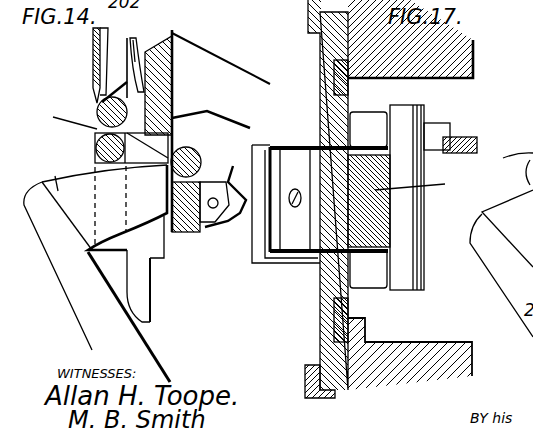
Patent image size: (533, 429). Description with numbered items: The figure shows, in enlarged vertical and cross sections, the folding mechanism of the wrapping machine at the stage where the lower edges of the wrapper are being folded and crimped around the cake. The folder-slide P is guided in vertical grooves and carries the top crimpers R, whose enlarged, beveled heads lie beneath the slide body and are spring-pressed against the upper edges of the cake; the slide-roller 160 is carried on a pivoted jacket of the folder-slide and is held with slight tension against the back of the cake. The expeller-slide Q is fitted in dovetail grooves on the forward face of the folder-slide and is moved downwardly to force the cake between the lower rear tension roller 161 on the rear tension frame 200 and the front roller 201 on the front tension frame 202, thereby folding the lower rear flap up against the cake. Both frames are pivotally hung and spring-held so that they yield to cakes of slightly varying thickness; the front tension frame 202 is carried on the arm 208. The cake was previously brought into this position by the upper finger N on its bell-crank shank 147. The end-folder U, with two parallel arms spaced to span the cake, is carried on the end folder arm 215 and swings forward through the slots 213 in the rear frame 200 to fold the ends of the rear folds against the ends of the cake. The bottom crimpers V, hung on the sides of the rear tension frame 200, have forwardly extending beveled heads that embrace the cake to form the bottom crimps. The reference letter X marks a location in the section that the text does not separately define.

In FIG. 14, the front tension frame 202 is at (185, 205).
In FIG. 14, the front roller 201 is at (203, 147).
In FIG. 17, the front roller 201 is at (400, 203).
In FIG. 17, the rear tension frame 200 is at (277, 315).
In FIG. 17, the slots 213 is at (328, 140).
In FIG. 17, the arm 208 is at (455, 142).
In FIG. 14, the end folder arm 215 is at (97, 273).
In FIG. 14, the slide-roller 160 is at (97, 107).
In FIG. 14, the lower rear tension roller 161 is at (95, 147).
In FIG. 14, the bell-crank shank 147 is at (219, 109).
In FIG. 14, the folder-slide P is at (120, 52).
In FIG. 14, the top crimpers R is at (138, 62).
In FIG. 14, the expeller-slide Q is at (165, 68).
In FIG. 14, the upper finger N is at (221, 66).
In FIG. 14, the end-folder U is at (64, 171).
In FIG. 17, the end-folder U is at (290, 133).
In FIG. 14, the bottom crimpers V is at (133, 275).
In FIG. 17, the bottom crimpers V is at (368, 200).
In FIG. 14, the member X is at (69, 118).
In FIG. 17, the member X is at (416, 193).